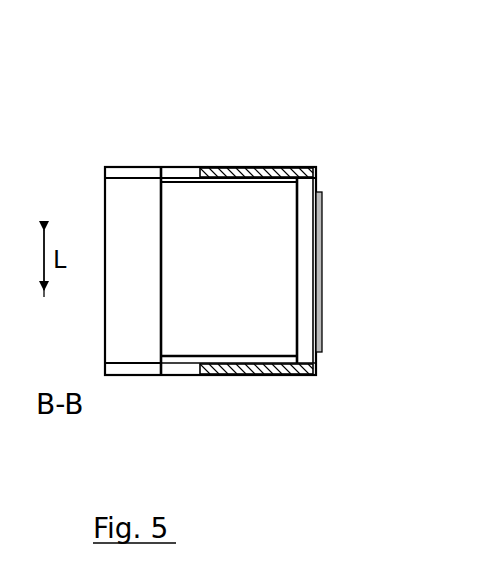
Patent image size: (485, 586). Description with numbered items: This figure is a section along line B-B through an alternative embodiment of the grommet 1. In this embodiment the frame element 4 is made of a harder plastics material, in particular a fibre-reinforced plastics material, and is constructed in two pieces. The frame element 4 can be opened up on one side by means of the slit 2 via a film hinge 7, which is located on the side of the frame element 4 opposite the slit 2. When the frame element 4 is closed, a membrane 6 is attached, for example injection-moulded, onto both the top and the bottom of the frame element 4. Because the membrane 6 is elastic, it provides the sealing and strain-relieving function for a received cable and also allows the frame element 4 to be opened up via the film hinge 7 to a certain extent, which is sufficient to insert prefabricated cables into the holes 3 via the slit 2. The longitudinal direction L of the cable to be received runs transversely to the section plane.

The grommet 1 is at (60, 181).
The slit 2 is at (133, 244).
The hole 3 is at (184, 170).
The frame element 4 is at (115, 299).
The membrane 6 is at (249, 170).
The film hinge 7 is at (322, 277).